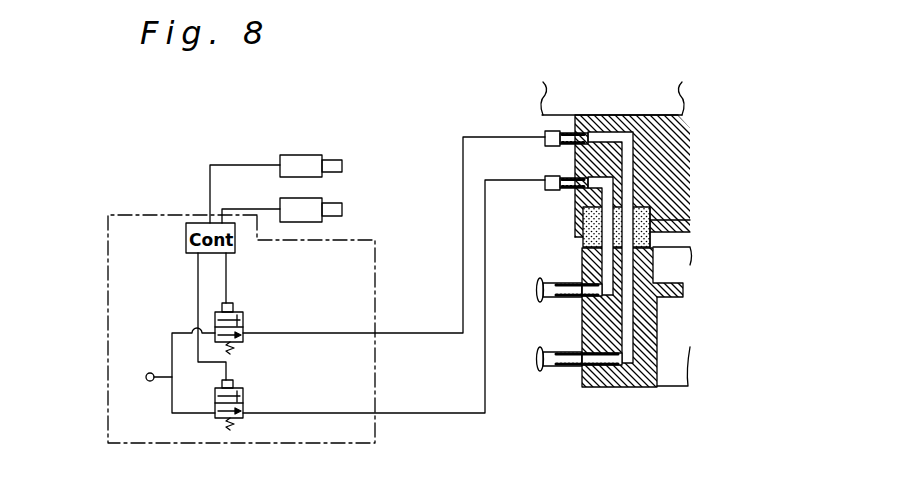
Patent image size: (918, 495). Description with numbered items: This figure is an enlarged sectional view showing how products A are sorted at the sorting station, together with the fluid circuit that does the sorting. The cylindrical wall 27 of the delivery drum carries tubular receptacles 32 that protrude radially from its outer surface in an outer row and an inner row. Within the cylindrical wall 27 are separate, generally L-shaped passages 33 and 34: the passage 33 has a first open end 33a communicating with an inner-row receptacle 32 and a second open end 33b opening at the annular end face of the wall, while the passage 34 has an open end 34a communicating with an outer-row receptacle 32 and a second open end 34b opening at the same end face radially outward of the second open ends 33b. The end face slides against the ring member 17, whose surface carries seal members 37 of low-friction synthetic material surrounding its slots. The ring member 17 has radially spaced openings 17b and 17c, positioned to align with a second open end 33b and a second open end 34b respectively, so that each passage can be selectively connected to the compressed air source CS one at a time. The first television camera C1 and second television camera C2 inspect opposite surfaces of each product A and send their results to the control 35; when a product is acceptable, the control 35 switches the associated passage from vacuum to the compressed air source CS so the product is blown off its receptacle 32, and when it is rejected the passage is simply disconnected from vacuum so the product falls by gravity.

The ring member 17 is at (668, 197).
The opening 17b is at (685, 172).
The opening 17c is at (670, 143).
The seal member 37 is at (692, 225).
The passage 33 is at (630, 336).
The first open end 33a is at (612, 387).
The second open end 33b is at (657, 271).
The passage 34 is at (683, 309).
The open end 34a is at (603, 297).
The second open end 34b is at (605, 260).
The tubular receptacle 32 is at (560, 280).
The cylindrical wall 27 is at (647, 386).
The product A is at (537, 292).
The first television camera C1 is at (300, 158).
The second television camera C2 is at (310, 197).
The compressed air source CS is at (146, 376).
The control 35 is at (108, 422).